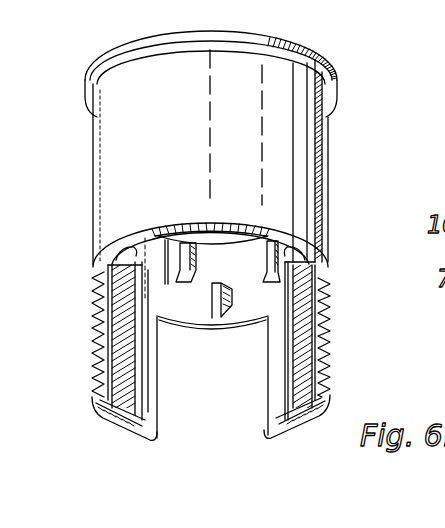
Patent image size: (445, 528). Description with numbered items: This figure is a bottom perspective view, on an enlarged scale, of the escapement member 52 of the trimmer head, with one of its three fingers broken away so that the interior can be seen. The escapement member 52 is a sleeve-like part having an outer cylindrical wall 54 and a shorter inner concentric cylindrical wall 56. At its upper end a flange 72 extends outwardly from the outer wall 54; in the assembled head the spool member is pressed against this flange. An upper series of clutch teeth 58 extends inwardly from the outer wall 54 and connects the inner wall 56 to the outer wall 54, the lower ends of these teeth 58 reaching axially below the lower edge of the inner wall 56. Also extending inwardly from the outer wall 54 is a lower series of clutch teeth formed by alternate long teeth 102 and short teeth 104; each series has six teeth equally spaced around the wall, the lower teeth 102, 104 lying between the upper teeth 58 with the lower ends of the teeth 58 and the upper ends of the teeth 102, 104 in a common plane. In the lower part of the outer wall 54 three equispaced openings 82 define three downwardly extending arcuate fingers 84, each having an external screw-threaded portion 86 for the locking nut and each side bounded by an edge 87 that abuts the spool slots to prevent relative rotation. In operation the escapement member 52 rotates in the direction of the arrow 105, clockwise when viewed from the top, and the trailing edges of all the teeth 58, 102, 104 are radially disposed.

The escapement member 52 is at (332, 184).
The outer cylindrical wall 54 is at (117, 133).
The inner concentric cylindrical wall 56 is at (164, 277).
The upper series of clutch teeth 58 is at (266, 262).
The flange 72 is at (322, 62).
The openings 82 is at (198, 400).
The fingers 84 is at (101, 413).
The screw-threaded portion 86 is at (98, 304).
The edge 87 is at (322, 392).
The long teeth 102 is at (140, 355).
The short teeth 104 is at (123, 252).
The arrow 105 is at (176, 19).